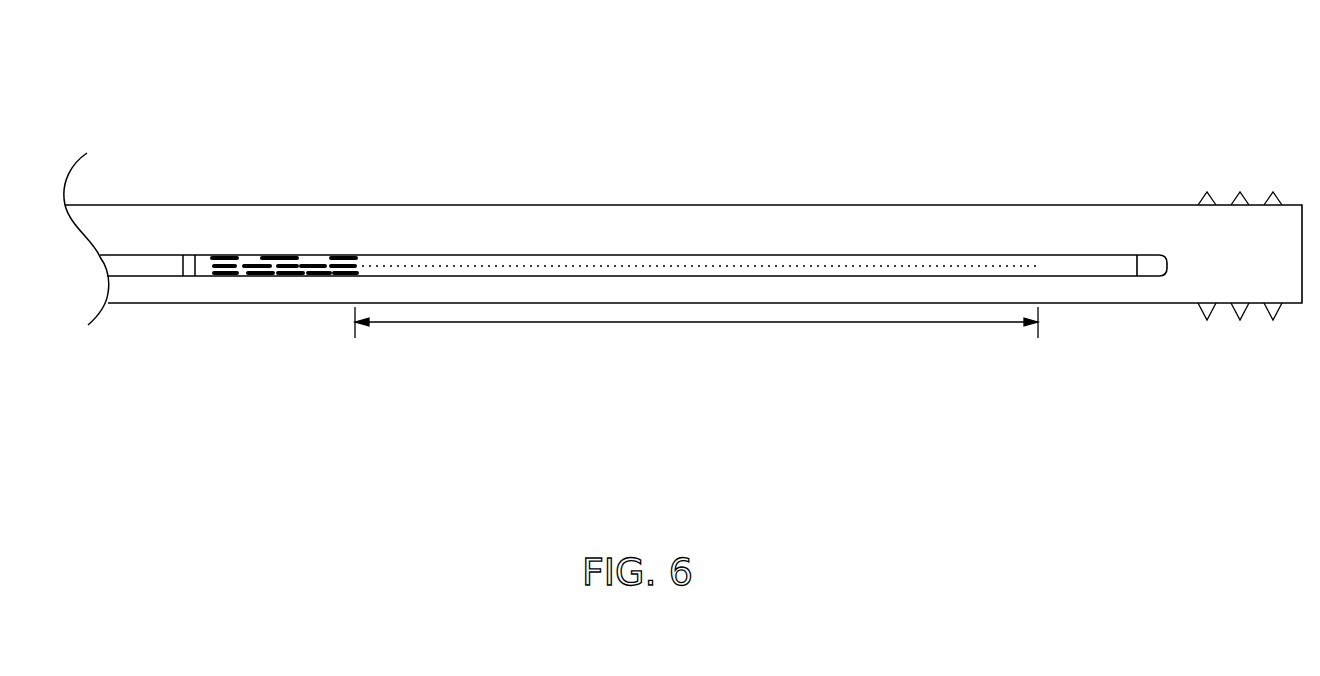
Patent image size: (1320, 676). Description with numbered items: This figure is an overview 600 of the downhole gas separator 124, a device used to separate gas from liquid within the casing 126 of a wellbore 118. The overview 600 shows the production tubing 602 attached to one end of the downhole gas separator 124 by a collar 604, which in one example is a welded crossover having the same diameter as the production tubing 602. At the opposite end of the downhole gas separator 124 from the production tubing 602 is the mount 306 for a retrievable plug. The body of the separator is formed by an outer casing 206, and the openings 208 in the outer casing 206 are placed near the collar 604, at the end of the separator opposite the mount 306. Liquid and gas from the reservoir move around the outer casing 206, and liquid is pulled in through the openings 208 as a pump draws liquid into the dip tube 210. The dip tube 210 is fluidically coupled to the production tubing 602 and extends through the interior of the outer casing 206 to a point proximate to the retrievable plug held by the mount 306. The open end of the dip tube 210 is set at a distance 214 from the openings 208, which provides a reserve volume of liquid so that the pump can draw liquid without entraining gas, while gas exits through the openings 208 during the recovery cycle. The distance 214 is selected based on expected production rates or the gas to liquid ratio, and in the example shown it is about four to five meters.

The downhole gas separator 124 is at (1168, 117).
The wellbore 118 is at (1081, 330).
The casing 126 is at (378, 205).
The production tubing 602 is at (113, 253).
The collar 604 is at (185, 277).
The openings 208 is at (356, 237).
The outer casing 206 is at (550, 255).
The dip tube 210 is at (720, 266).
The mount 306 is at (1152, 256).
The distance 214 is at (653, 322).
The overview 600 is at (641, 516).